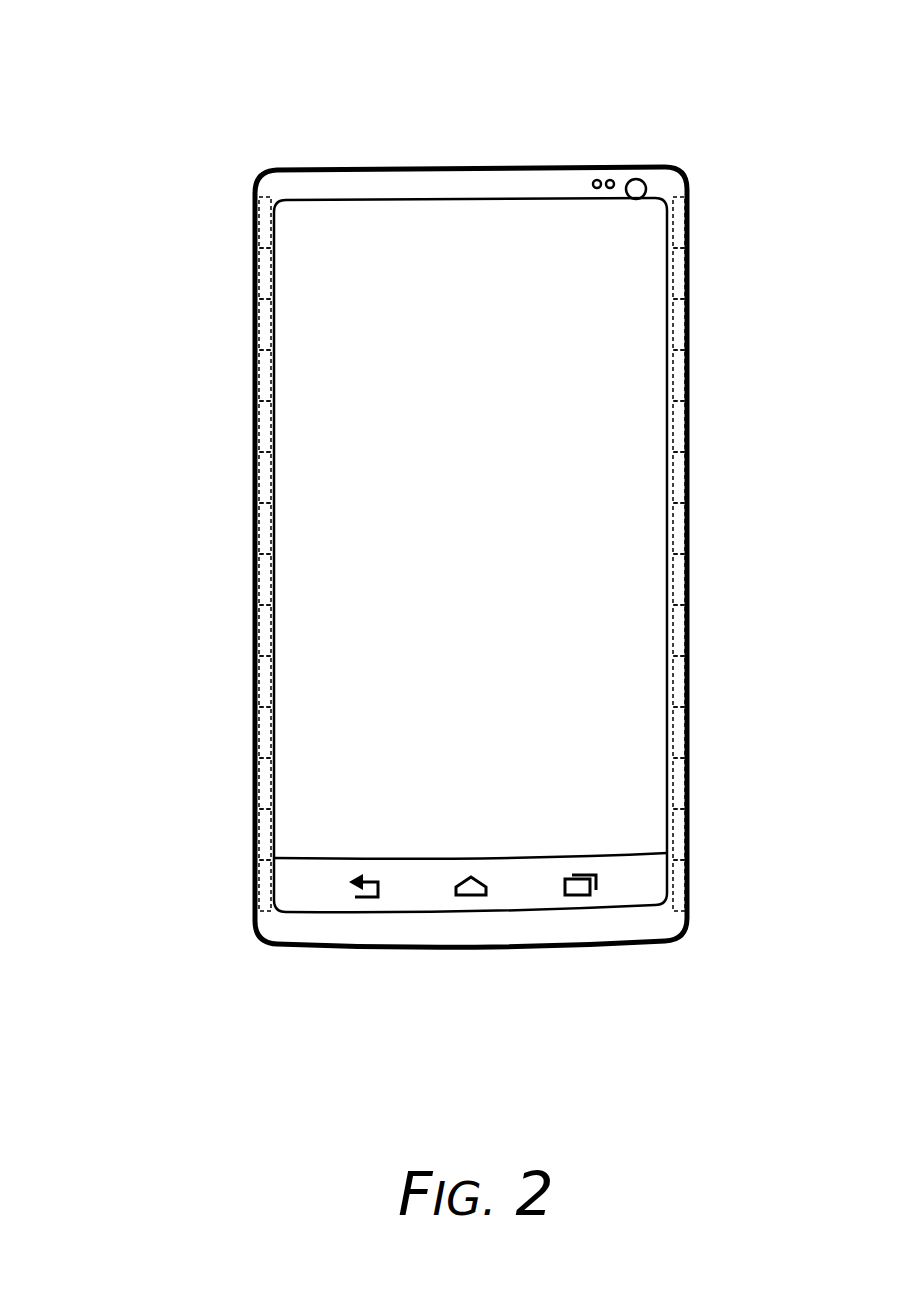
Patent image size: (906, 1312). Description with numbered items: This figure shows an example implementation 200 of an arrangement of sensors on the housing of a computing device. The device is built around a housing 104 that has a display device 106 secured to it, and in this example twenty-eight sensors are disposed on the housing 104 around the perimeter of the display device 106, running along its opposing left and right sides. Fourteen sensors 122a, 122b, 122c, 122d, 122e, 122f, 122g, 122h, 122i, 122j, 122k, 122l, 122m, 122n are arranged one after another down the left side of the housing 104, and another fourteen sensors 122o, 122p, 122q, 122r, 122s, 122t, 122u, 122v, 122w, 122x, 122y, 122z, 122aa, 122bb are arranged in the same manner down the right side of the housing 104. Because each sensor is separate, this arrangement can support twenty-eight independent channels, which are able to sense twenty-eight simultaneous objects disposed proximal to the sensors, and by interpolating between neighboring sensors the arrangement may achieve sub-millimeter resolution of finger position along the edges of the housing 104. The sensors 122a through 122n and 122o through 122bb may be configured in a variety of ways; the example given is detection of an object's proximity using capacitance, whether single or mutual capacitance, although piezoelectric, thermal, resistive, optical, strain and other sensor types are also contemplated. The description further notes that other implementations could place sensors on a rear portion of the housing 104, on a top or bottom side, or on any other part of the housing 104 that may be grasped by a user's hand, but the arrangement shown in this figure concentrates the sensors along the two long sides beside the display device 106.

The electronic device 200 is at (165, 70).
The housing 104 is at (411, 175).
The display device 106 is at (636, 242).
The sensor 122a is at (257, 208).
The sensor 122b is at (257, 259).
The sensor 122c is at (257, 310).
The sensor 122d is at (257, 361).
The sensor 122e is at (257, 412).
The sensor 122f is at (257, 463).
The sensor 122g is at (257, 514).
The sensor 122h is at (257, 565).
The sensor 122i is at (257, 616).
The sensor 122j is at (257, 667).
The sensor 122k is at (257, 718).
The sensor 122l is at (257, 769).
The sensor 122m is at (257, 820).
The sensor 122n is at (257, 871).
The sensor 122o is at (690, 208).
The sensor 122p is at (690, 259).
The sensor 122q is at (690, 310).
The sensor 122r is at (690, 361).
The sensor 122s is at (690, 412).
The sensor 122t is at (690, 463).
The sensor 122u is at (690, 514).
The sensor 122v is at (690, 565).
The sensor 122w is at (690, 616).
The sensor 122x is at (690, 667).
The sensor 122y is at (690, 718).
The sensor 122z is at (690, 769).
The sensor 122aa is at (690, 820).
The sensor 122bb is at (690, 871).